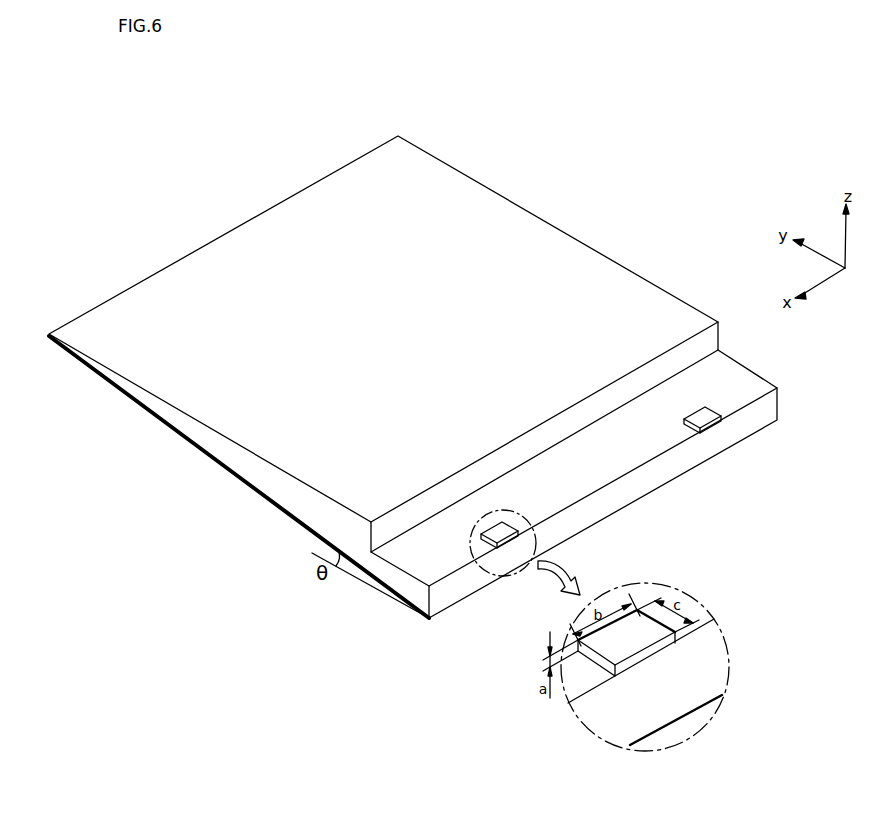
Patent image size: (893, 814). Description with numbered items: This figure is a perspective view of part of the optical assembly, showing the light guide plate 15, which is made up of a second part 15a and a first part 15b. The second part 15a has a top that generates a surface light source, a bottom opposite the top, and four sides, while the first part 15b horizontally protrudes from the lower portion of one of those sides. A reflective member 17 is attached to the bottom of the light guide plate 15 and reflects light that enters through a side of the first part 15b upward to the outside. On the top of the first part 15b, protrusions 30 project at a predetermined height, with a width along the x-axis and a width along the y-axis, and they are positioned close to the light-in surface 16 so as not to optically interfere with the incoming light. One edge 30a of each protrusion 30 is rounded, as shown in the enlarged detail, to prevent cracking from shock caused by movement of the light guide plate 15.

The light guide plate 15 is at (383, 329).
The second part 15a is at (463, 205).
The first part 15b is at (620, 440).
The light-in surface 16 is at (716, 440).
The reflective member 17 is at (214, 465).
The protrusion 30 is at (710, 410).
The rounded edge of protrusion 30a is at (596, 665).